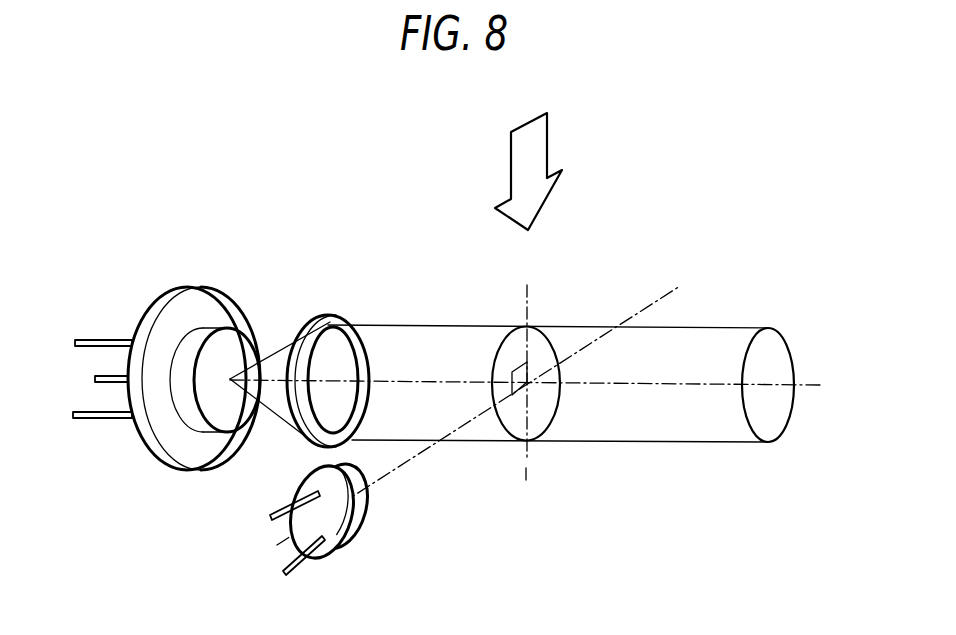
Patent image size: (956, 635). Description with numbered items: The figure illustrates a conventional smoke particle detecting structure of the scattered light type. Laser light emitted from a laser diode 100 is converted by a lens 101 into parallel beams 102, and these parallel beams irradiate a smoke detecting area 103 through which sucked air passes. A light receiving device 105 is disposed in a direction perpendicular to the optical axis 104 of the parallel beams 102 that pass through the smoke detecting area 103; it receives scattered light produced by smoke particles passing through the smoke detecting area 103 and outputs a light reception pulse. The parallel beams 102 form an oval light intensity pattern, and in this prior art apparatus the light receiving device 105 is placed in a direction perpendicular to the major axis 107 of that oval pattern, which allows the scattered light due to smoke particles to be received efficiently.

The laser diode 100 is at (196, 302).
The lens 101 is at (328, 316).
The parallel beams 102 is at (440, 324).
The smoke detecting area 103 is at (533, 348).
The optical axis 104 is at (768, 385).
The light receiving device 105 is at (337, 548).
The major axis 107 is at (528, 473).